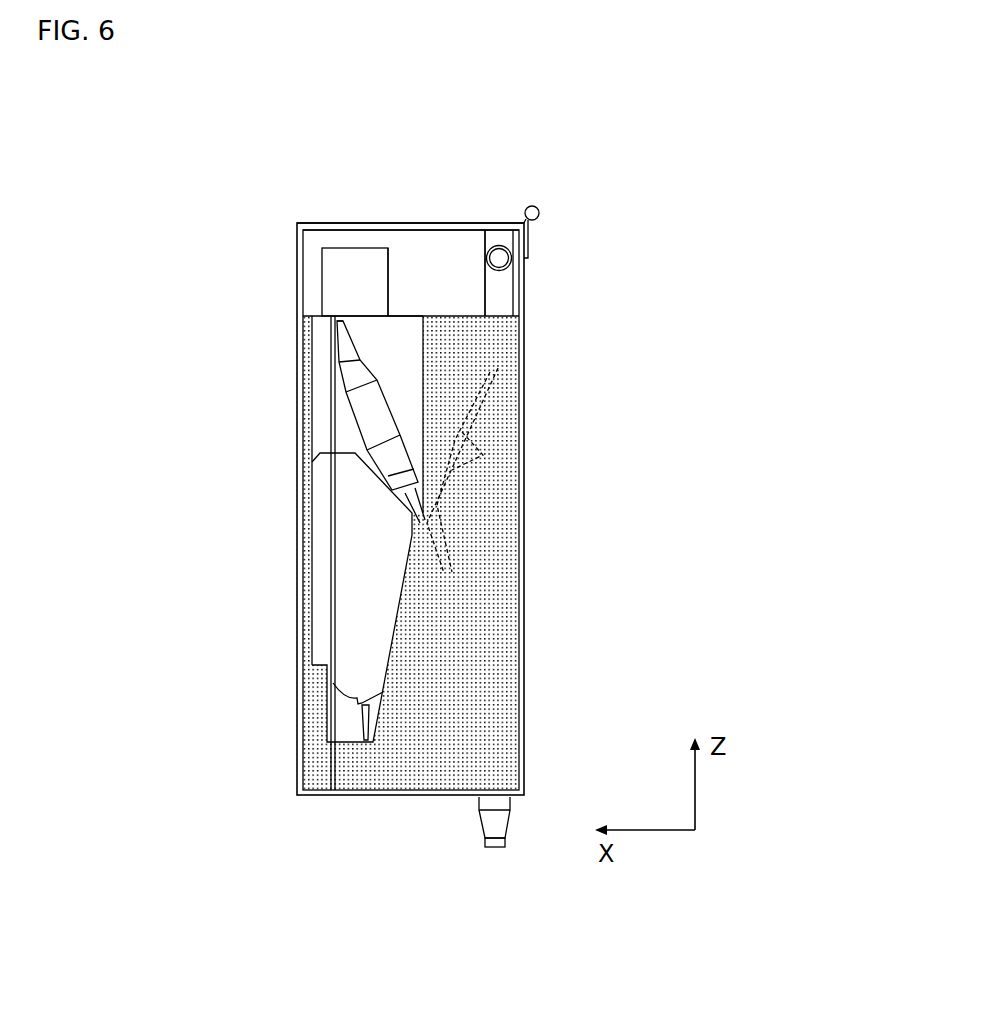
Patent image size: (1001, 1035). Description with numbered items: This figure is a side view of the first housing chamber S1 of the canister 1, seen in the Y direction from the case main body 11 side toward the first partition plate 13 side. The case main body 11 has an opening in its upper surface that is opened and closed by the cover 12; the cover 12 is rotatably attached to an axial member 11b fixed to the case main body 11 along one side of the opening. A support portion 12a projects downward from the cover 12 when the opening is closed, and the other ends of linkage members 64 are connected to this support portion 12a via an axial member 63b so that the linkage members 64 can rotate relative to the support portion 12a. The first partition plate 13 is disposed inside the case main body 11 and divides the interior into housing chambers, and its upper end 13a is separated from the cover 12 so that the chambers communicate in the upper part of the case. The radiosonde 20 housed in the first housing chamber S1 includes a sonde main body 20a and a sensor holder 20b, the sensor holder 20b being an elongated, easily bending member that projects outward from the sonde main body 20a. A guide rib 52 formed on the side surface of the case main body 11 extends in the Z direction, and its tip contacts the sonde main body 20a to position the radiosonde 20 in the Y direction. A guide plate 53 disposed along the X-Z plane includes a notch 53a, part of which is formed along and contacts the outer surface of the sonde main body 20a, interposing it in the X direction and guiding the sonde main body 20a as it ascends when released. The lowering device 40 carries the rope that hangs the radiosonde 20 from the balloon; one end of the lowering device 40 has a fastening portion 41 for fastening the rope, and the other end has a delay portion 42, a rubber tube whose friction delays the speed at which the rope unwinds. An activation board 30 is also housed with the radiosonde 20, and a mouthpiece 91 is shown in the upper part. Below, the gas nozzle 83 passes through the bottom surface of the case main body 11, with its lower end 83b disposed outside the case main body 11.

The canister 1 is at (245, 495).
The case main body 11 is at (524, 488).
The axial member 11b is at (539, 213).
The cover 12 is at (323, 230).
The support portion 12a is at (499, 238).
The first partition plate 13 is at (392, 335).
The upper end 13a is at (413, 313).
The radiosonde 20 is at (345, 697).
The sonde main body 20a is at (373, 588).
The sensor holder 20b is at (481, 404).
The activation board 30 is at (363, 728).
The lowering device 40 is at (373, 410).
The fastening portion 41 is at (334, 336).
The delay portion 42 is at (438, 545).
The guide rib 52 is at (332, 410).
The guide plate 53 is at (460, 652).
The notch 53a is at (423, 342).
The axial member 63b is at (508, 261).
The linkage member 64 is at (500, 290).
The gas nozzle 83 is at (512, 822).
The lower end 83b is at (493, 830).
The mouthpiece 91 is at (345, 285).
The first housing chamber S1 is at (393, 365).